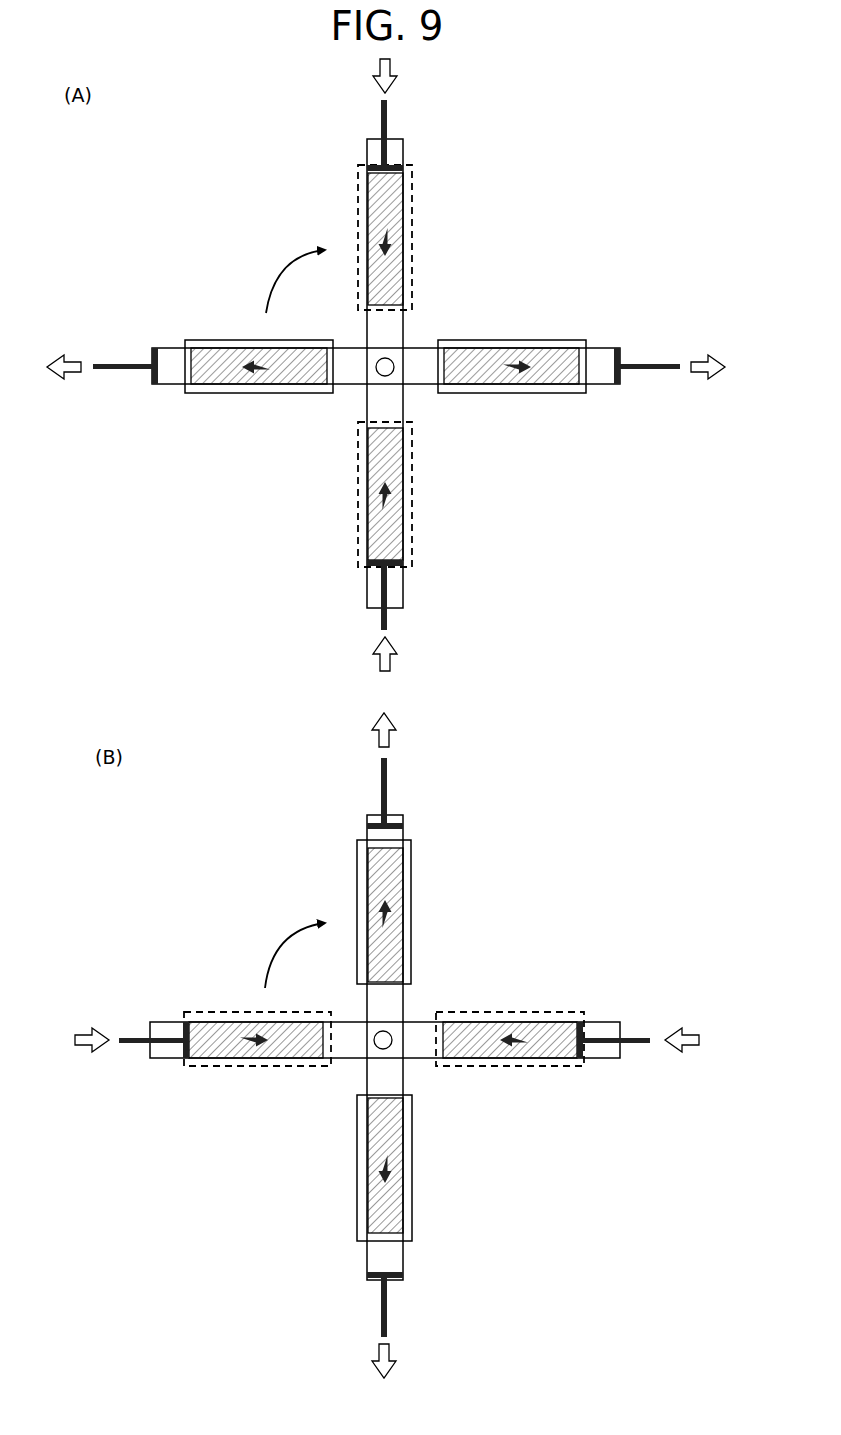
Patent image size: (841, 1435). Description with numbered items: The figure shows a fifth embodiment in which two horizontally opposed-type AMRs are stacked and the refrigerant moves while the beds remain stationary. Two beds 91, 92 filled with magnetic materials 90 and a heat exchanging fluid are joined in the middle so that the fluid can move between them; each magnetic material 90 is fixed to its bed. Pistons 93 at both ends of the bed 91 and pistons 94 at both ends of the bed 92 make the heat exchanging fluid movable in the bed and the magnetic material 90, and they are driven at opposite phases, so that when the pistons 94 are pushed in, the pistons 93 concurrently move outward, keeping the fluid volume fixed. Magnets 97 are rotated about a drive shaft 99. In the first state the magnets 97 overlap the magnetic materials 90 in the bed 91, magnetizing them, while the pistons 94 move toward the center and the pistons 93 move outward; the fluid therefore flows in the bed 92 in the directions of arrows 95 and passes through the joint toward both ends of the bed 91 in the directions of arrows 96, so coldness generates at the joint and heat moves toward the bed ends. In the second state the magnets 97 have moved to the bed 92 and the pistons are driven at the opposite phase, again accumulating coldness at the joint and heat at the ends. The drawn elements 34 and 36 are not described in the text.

The first beam 34 is at (465, 393).
The second beam 36 is at (403, 1065).
The magnetic material 90 is at (389, 192).
The bed 91 is at (200, 347).
The bed 92 is at (404, 224).
The piston 93 is at (115, 368).
The piston 94 is at (383, 122).
The arrow 95 is at (392, 245).
The arrow 96 is at (258, 373).
The magnet 97 is at (270, 340).
The drive shaft 99 is at (391, 358).